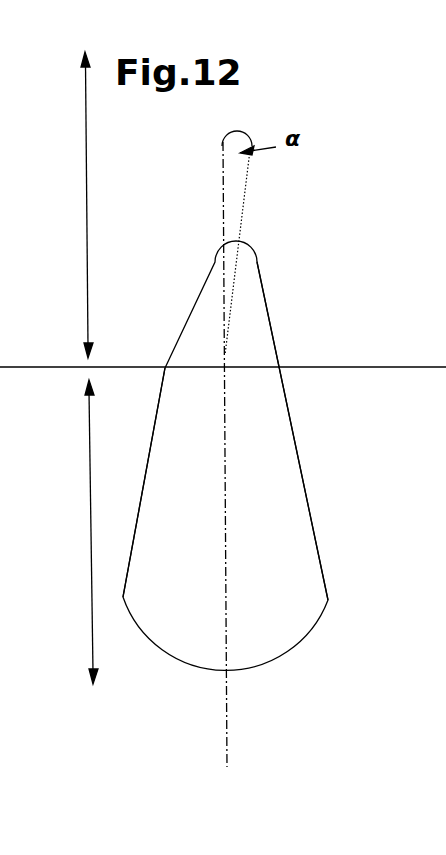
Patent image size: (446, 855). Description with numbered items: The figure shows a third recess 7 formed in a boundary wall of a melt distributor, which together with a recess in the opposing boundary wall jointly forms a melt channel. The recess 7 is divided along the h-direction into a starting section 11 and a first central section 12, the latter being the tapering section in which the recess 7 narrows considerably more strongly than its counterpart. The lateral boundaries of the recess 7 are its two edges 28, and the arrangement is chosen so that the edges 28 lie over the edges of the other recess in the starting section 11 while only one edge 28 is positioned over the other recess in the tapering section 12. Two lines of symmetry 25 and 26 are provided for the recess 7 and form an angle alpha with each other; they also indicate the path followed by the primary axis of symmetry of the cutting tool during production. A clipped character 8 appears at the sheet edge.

The recess 7 is at (276, 452).
The partial numeral (clipped) 8 is at (6, 545).
The starting section 11 is at (79, 532).
The first central section 12 is at (72, 205).
The line of symmetry 25 is at (246, 454).
The line of symmetry 26 is at (245, 187).
The edge 28 is at (310, 517).